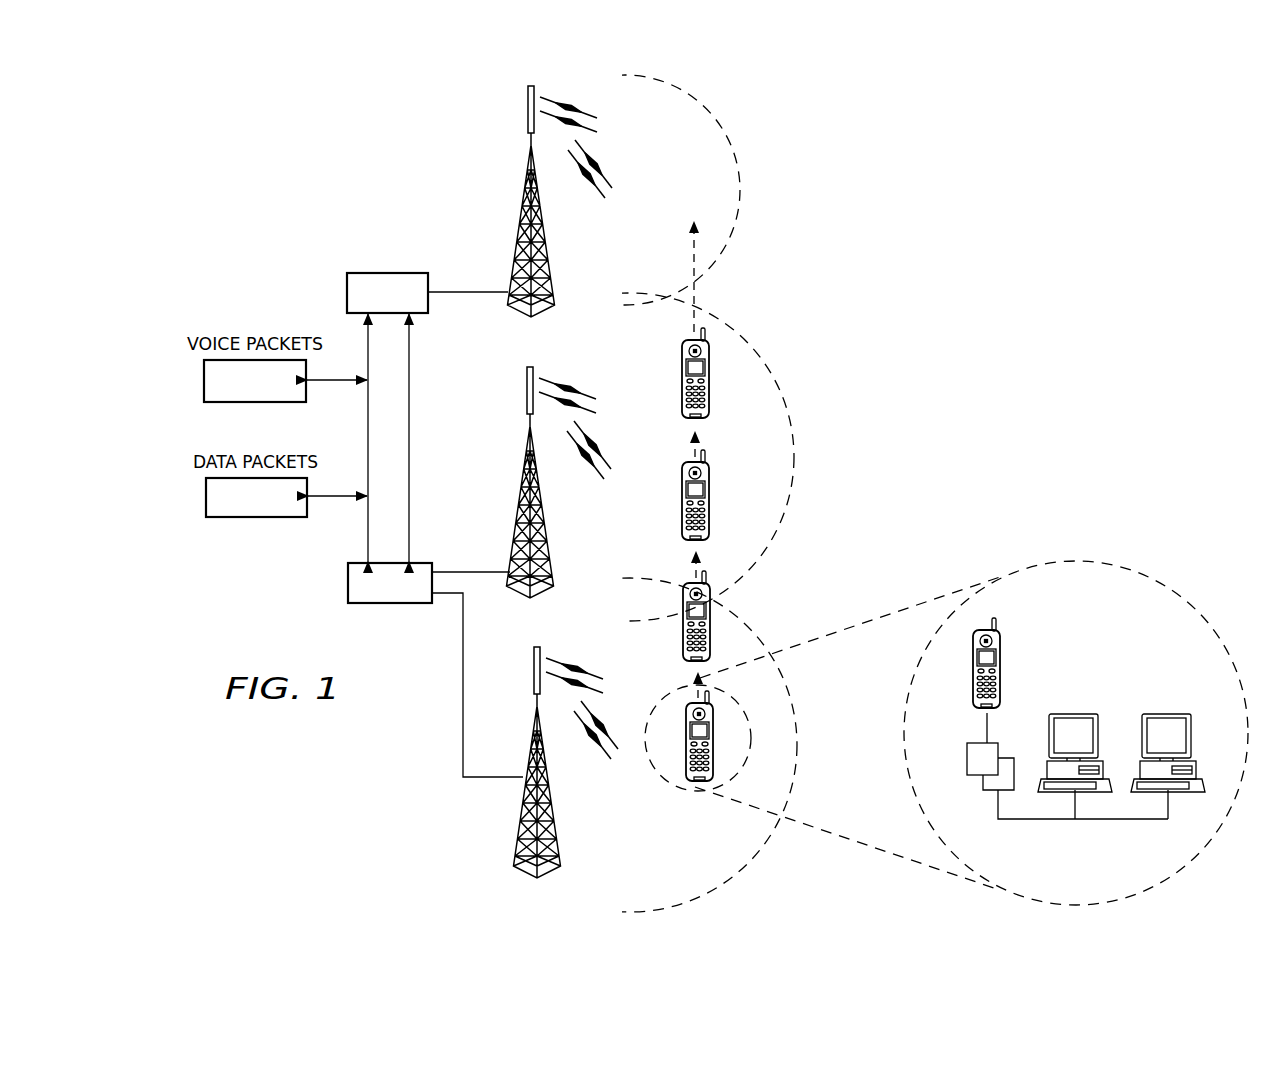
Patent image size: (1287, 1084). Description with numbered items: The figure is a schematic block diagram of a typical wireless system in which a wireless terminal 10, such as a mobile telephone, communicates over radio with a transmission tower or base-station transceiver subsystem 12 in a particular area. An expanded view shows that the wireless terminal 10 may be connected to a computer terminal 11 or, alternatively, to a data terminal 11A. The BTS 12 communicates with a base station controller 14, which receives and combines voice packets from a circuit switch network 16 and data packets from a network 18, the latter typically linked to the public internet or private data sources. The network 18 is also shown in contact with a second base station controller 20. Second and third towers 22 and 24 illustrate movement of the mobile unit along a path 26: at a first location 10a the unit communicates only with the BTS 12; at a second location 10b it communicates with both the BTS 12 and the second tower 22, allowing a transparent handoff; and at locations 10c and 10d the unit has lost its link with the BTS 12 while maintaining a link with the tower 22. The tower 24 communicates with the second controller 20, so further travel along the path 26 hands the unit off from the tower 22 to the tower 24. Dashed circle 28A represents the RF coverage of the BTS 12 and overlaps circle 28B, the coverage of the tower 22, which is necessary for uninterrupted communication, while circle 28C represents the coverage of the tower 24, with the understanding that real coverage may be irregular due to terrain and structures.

The wireless terminal 10 is at (1000, 668).
The first location of wireless terminal 10a is at (683, 753).
The second location of wireless terminal 10b is at (683, 605).
The third location of wireless terminal 10c is at (682, 510).
The fourth location of wireless terminal 10d is at (683, 378).
The computer terminal 11 is at (1078, 713).
The data terminal 11A is at (1172, 713).
The base-station transceiver subsystem 12 is at (531, 672).
The base station controller 14 is at (387, 603).
The circuit switch network 16 is at (204, 377).
The network 18 is at (206, 499).
The second base station controller 20 is at (385, 272).
The second base transmission station 22 is at (527, 392).
The third base transmission station 24 is at (525, 108).
The path 26 is at (693, 260).
The RF coverage circle of BTS unit 12 28A is at (797, 774).
The RF coverage circle of BTS unit 22 28B is at (795, 458).
The RF coverage circle of BTS unit 24 28C is at (739, 163).